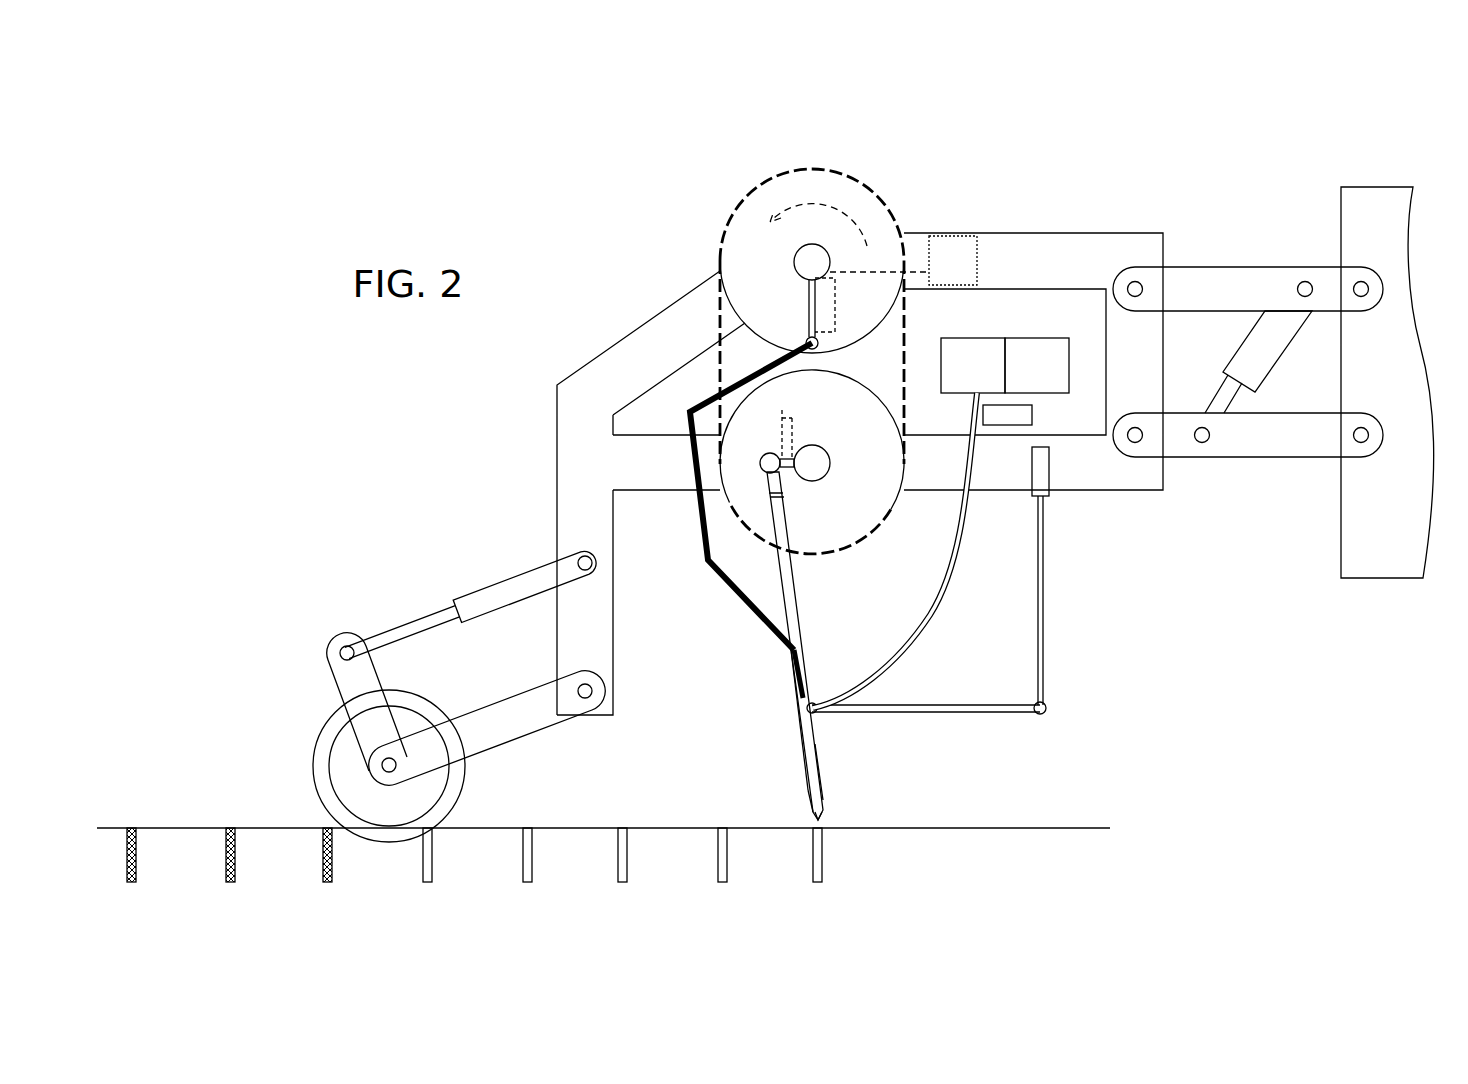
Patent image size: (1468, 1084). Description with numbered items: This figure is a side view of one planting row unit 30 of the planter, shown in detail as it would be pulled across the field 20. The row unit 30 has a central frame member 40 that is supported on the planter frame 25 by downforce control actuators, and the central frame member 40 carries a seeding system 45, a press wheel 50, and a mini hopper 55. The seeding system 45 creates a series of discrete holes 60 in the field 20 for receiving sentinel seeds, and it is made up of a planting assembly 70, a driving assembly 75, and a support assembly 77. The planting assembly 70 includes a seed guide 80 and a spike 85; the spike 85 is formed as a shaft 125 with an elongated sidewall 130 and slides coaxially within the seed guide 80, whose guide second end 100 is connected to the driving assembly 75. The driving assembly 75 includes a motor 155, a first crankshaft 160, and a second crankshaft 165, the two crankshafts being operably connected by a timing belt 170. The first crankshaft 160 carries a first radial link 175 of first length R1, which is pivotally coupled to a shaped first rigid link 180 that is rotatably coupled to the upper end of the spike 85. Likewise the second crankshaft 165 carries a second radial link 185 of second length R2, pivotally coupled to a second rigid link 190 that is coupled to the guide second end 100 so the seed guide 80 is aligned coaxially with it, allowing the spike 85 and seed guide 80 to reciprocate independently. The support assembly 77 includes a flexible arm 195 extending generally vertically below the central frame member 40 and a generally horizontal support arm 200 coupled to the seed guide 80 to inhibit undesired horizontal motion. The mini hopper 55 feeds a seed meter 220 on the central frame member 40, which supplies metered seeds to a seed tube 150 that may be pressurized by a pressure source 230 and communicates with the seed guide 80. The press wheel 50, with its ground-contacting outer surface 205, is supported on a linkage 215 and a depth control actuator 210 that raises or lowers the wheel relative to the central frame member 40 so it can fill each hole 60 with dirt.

The field 20 is at (186, 828).
The planter frame 25 is at (1370, 187).
The planting row unit 30 is at (558, 113).
The central frame member 40 is at (1138, 232).
The seeding system 45 is at (752, 324).
The press wheel 50 is at (352, 758).
The mini hopper 55 is at (1057, 363).
The hole 60 is at (139, 866).
The planting assembly 70 is at (770, 581).
The driving assembly 75 is at (905, 236).
The support assembly 77 is at (982, 553).
The seed guide 80 is at (819, 770).
The spike 85 is at (822, 818).
The guide second end 100 is at (769, 497).
The shaft 125 is at (805, 737).
The sidewall 130 is at (812, 791).
The seed tube 150 is at (930, 624).
The motor 155 is at (950, 236).
The first crankshaft 160 is at (812, 258).
The second crankshaft 165 is at (820, 467).
The timing belt 170 is at (718, 322).
The first radial link 175 is at (811, 311).
The first rigid link 180 is at (703, 524).
The second radial link 185 is at (787, 473).
The second rigid link 190 is at (796, 622).
The flexible arm 195 is at (1045, 598).
The support arm 200 is at (950, 706).
The outer surface 205 is at (348, 752).
The depth control actuator 210 is at (480, 608).
The linkage 215 is at (500, 722).
The seed meter 220 is at (997, 350).
The pressure source 230 is at (1030, 422).
The first length R1 is at (833, 305).
The second length R2 is at (786, 410).